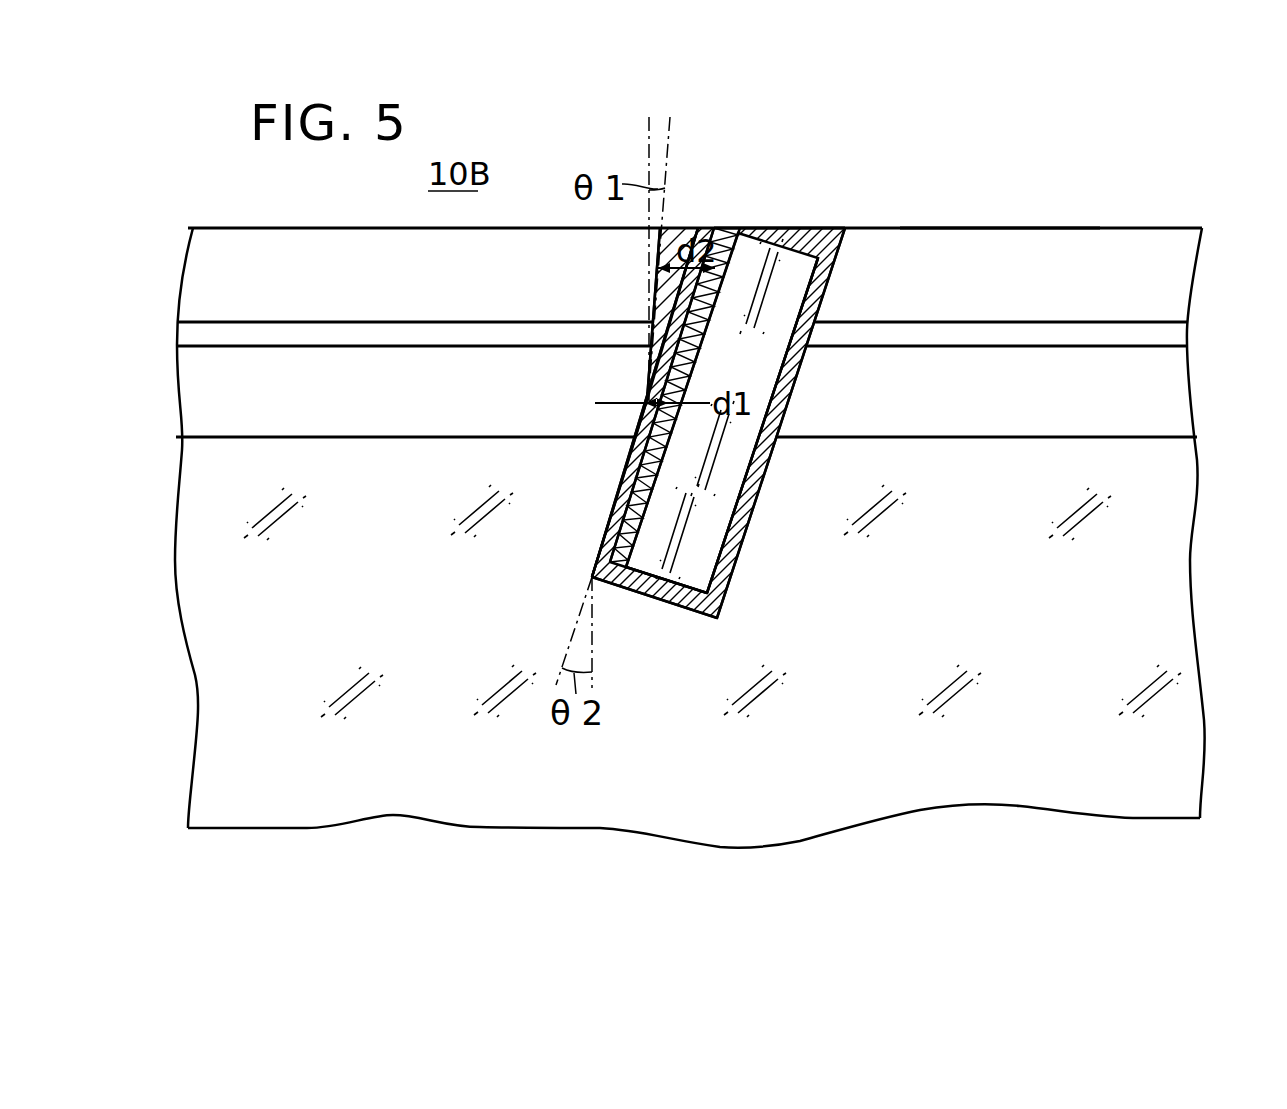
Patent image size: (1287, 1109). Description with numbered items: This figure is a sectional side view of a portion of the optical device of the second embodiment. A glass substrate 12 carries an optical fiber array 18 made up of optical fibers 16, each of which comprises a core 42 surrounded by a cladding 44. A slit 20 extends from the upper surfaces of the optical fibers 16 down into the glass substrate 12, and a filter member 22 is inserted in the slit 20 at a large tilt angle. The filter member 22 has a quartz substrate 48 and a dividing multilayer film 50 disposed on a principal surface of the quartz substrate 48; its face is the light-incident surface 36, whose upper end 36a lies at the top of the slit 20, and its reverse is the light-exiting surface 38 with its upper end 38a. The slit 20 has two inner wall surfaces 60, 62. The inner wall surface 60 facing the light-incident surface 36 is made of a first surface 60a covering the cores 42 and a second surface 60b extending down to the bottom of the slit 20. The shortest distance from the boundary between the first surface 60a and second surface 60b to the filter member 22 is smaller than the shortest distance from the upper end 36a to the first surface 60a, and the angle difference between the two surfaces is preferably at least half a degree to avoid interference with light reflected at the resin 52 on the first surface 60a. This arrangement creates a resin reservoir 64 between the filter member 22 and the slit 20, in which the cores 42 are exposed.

The glass substrate 12 is at (1157, 527).
The optical fibers 16 is at (1143, 227).
The optical fiber array 18 is at (1012, 228).
The slit 20 is at (747, 525).
The filter member 22 is at (721, 556).
The light-incident surface 36 is at (700, 318).
The upper end of light-incident surface 36a is at (722, 228).
The light-exiting surface 38 is at (787, 404).
The upper end of light-exiting surface 38a is at (832, 252).
The core 42 is at (1157, 333).
The cladding 44 is at (1157, 275).
The quartz substrate 48 is at (673, 573).
The dividing multilayer film 50 is at (615, 518).
The resin 52 is at (630, 479).
The inner wall surface 60 is at (515, 368).
The first surface 60a is at (655, 367).
The second surface 60b is at (636, 433).
The inner wall surface 62 is at (775, 446).
The resin reservoir 64 is at (682, 306).